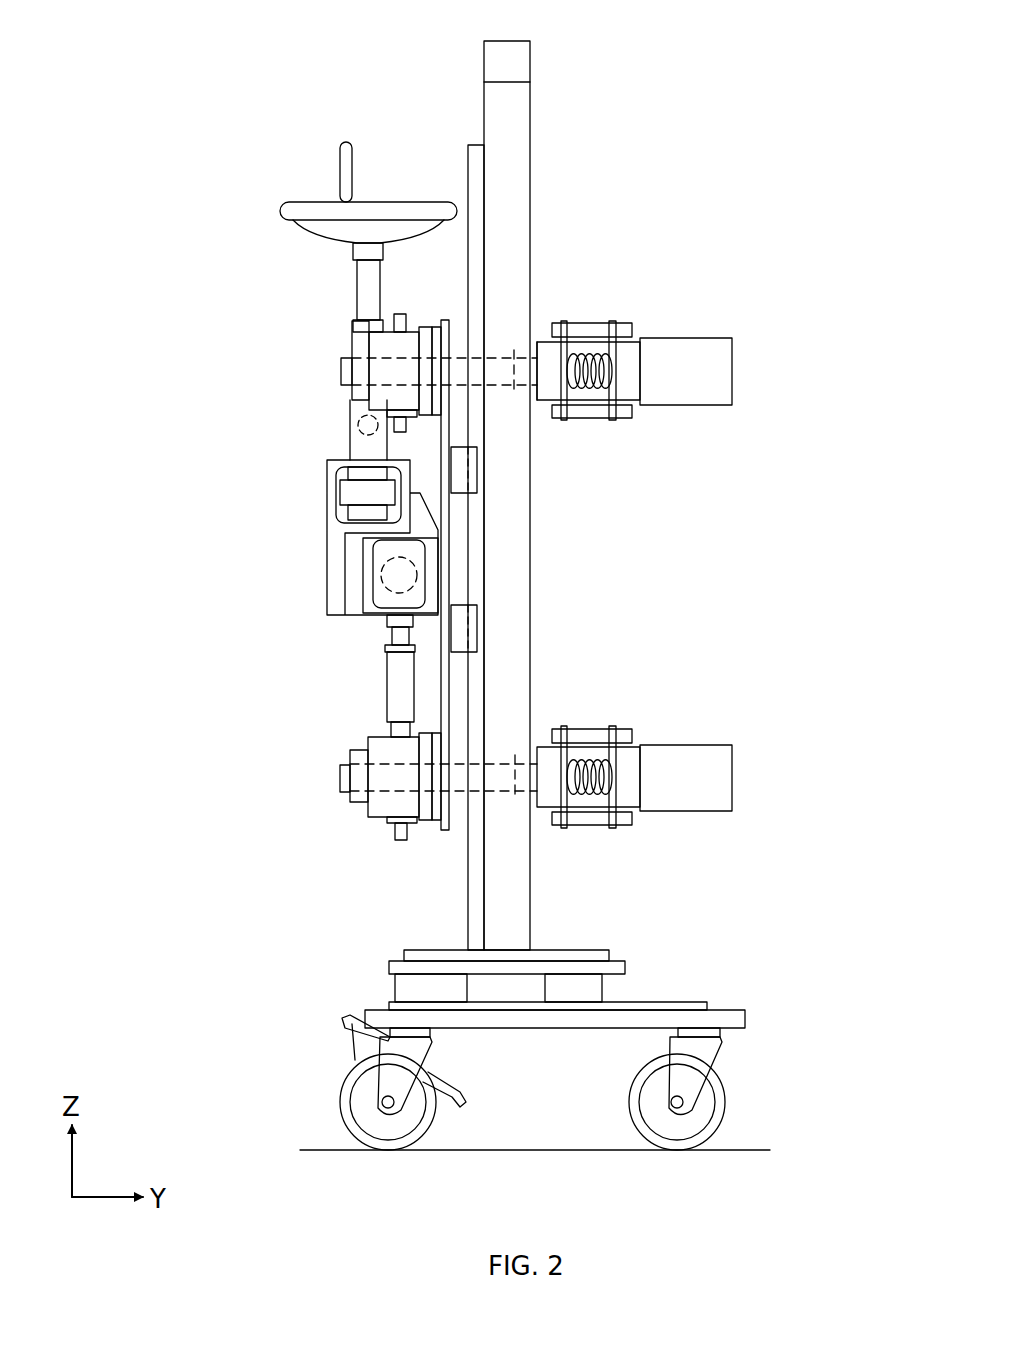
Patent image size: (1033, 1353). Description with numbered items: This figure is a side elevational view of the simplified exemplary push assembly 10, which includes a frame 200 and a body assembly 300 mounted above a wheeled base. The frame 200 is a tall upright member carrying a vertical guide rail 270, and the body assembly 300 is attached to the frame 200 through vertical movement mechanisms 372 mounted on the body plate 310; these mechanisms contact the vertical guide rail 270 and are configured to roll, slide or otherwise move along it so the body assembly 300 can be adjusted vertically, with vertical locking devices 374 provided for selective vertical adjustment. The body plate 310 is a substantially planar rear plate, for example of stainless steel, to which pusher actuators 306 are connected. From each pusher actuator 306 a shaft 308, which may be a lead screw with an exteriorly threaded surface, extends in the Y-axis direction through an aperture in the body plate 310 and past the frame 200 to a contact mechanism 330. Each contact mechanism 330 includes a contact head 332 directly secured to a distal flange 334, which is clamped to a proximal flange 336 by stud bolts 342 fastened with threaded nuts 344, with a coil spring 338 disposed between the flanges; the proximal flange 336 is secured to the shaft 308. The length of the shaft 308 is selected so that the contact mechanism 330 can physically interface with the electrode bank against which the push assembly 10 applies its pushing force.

The push assembly 10 is at (235, 66).
The frame 200 is at (564, 53).
The vertical guide rail 270 is at (468, 150).
The body assembly 300 is at (298, 607).
The pusher actuator 306 is at (365, 357).
The shaft 308 is at (493, 372).
The body plate 310 is at (445, 320).
The contact mechanism 330 is at (704, 312).
The contact head 332 is at (710, 375).
The distal flange 334 is at (612, 420).
The proximal flange 336 is at (564, 420).
The coil spring 338 is at (575, 355).
The stud bolt 342 is at (590, 735).
The threaded nut 344 is at (545, 738).
The vertical movement mechanism 372 is at (464, 470).
The vertical locking device 374 is at (480, 617).